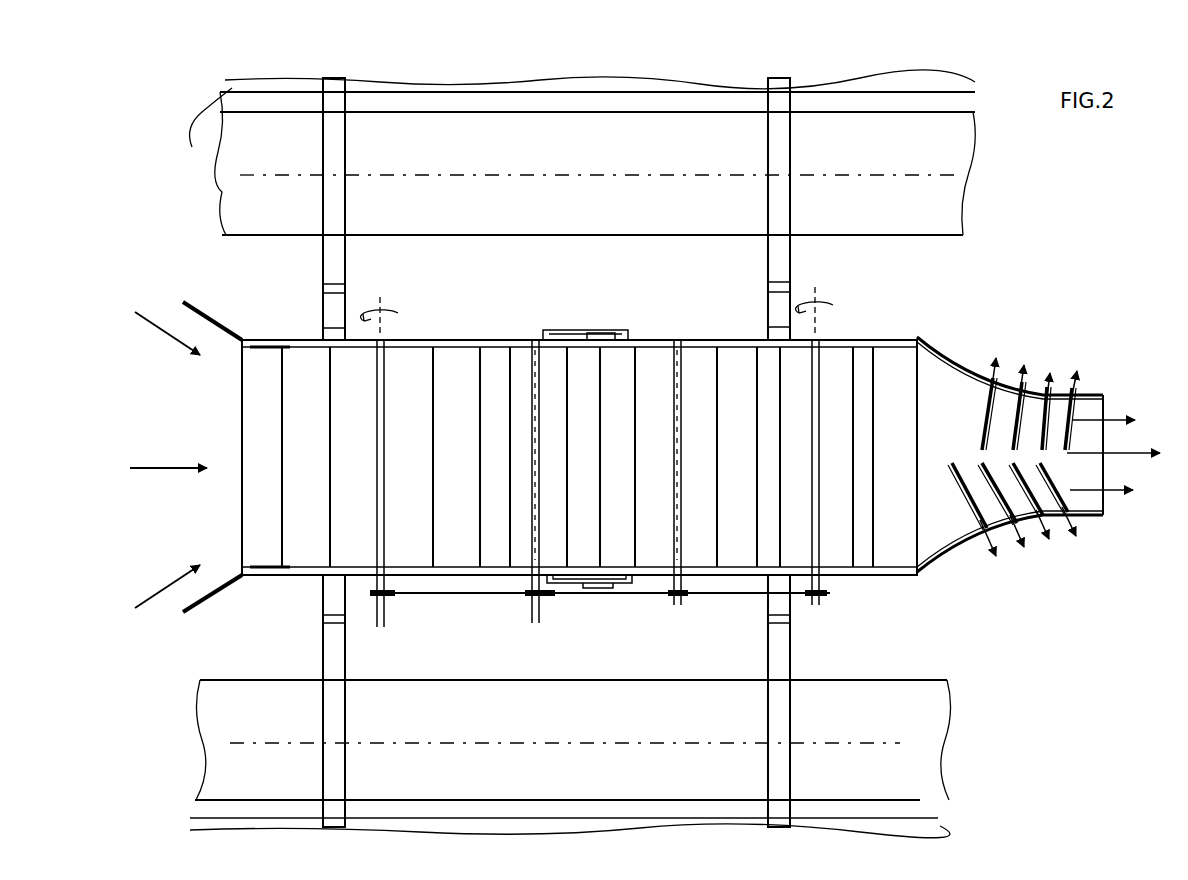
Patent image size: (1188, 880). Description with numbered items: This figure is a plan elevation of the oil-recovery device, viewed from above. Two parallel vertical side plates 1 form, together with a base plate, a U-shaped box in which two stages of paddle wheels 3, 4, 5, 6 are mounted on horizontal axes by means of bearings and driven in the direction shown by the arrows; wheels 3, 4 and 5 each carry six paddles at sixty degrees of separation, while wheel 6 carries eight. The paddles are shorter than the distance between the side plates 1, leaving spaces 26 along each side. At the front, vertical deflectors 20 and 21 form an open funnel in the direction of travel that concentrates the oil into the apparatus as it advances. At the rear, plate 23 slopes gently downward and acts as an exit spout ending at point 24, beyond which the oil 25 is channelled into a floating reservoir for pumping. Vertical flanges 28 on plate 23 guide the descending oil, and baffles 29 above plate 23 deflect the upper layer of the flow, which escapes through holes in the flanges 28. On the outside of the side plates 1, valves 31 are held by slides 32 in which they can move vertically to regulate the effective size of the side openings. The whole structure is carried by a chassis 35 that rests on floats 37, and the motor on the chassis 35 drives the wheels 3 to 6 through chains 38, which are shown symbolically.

The side plates 1 is at (717, 343).
The paddle wheel 3 is at (388, 361).
The paddle wheel 4 is at (533, 350).
The paddle wheel 5 is at (680, 350).
The paddle wheel 6 is at (825, 345).
The vertical deflector 20 is at (216, 316).
The vertical deflector 21 is at (217, 600).
The plate 23 is at (952, 507).
The point 24 is at (1105, 400).
The oil 25 is at (1134, 453).
The spaces 26 is at (285, 348).
The vertical flanges 28 is at (958, 360).
The baffles 29 is at (980, 459).
The valves 31 is at (597, 333).
The slides 32 is at (543, 330).
The chassis 35 is at (345, 155).
The floats 37 is at (237, 157).
The chains 38 is at (477, 600).